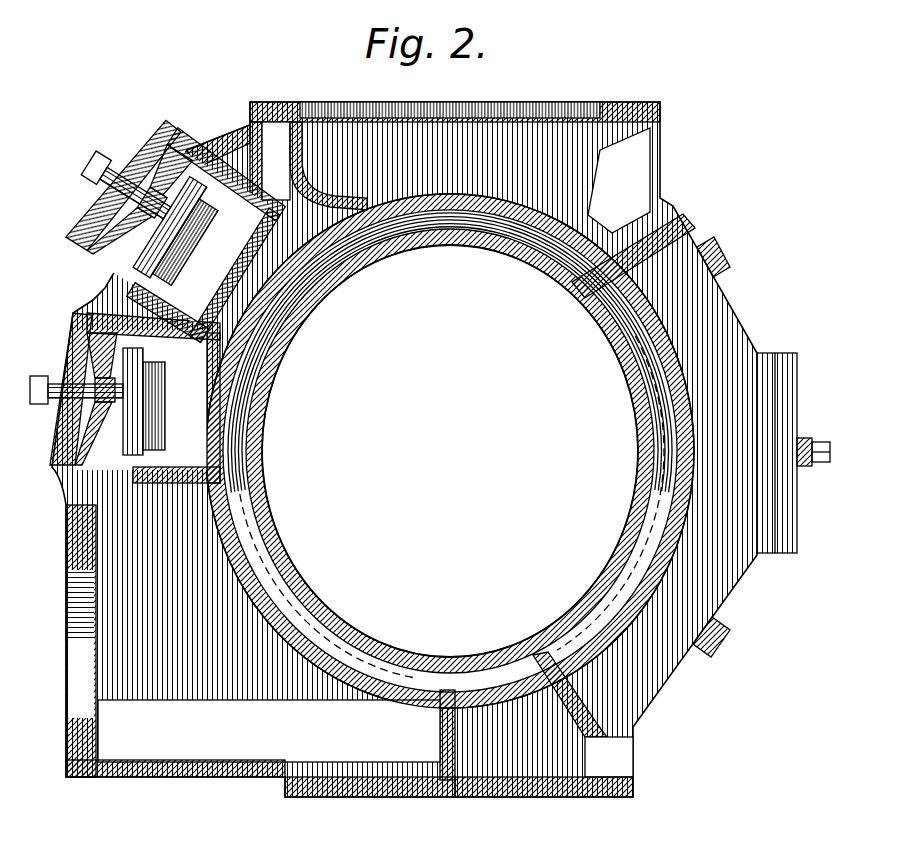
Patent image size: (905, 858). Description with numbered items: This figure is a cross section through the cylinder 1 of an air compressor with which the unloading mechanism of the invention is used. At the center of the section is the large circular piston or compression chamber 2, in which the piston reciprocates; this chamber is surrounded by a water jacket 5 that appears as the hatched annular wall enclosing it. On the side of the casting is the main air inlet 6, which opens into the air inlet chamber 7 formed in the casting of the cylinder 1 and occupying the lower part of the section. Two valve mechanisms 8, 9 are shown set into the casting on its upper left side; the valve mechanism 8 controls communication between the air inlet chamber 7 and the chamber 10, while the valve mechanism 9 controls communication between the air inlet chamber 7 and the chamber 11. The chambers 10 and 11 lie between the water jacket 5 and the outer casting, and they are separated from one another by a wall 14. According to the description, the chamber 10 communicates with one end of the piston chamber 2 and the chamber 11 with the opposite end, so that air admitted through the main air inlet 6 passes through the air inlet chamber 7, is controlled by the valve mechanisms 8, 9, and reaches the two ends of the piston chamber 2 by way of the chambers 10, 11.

The cylinder 1 is at (441, 449).
The piston chamber 2 is at (450, 451).
The water jacket 5 is at (636, 362).
The main air inlet 6 is at (74, 672).
The air inlet chamber 7 is at (260, 748).
The valve mechanism 8 is at (122, 438).
The valve mechanism 9 is at (215, 240).
The chamber 10 is at (190, 442).
The chamber 11 is at (268, 288).
The wall 14 is at (238, 342).